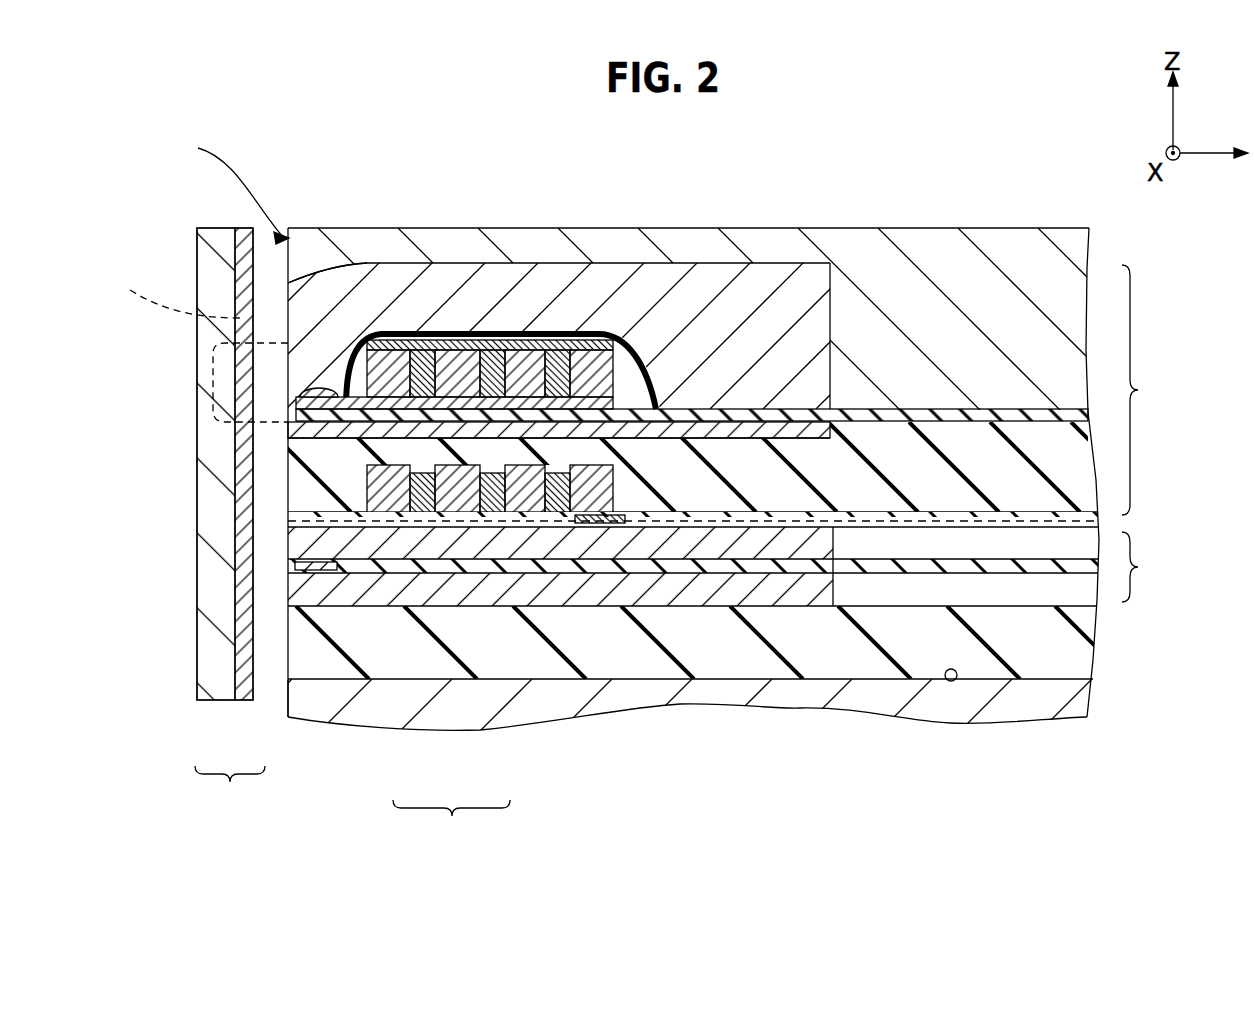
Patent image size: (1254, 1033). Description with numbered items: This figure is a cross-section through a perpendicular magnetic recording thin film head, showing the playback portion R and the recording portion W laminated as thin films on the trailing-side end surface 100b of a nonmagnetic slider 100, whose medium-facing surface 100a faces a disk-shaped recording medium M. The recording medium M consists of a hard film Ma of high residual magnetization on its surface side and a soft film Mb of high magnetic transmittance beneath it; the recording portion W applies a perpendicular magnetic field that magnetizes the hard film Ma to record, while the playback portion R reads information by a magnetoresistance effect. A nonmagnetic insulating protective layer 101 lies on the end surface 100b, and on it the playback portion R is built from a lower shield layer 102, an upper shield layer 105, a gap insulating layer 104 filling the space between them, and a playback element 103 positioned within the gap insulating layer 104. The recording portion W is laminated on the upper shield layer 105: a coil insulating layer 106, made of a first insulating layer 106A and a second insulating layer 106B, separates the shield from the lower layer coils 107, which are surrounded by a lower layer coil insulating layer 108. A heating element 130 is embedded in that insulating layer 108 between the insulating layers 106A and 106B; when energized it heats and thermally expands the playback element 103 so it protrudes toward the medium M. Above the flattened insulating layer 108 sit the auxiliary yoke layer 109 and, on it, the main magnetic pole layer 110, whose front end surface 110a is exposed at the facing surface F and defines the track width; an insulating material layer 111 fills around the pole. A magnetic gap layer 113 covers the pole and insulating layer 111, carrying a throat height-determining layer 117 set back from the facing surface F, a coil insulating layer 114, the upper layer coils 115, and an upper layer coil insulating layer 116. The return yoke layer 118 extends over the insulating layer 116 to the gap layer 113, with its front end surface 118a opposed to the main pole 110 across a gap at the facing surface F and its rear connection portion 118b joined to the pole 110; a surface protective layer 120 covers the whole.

The slider 100 is at (850, 695).
The medium-facing surface 100a is at (285, 703).
The trailing-side end surface 100b is at (955, 681).
The protective layer 101 is at (340, 663).
The lower shield layer 102 is at (300, 595).
The playback element 103 is at (292, 567).
The gap insulating layer 104 is at (670, 567).
The upper shield layer 105 is at (300, 550).
The coil insulating layer 106 is at (693, 653).
The first insulating layer 106A is at (404, 525).
The second insulating layer 106B is at (467, 515).
The lower layer coils 107 is at (445, 437).
The lower layer coil insulating layer 108 is at (298, 492).
The auxiliary yoke layer 109 is at (340, 450).
The main magnetic pole layer 110 is at (290, 428).
The front end surface 110a is at (290, 412).
The insulating material layer 111 is at (992, 413).
The magnetic gap layer 113 is at (290, 403).
The coil insulating layer 114 is at (552, 397).
The upper layer coils 115 is at (488, 338).
The upper layer coil insulating layer 116 is at (637, 353).
The throat height-determining layer 117 is at (323, 389).
The return yoke layer 118 is at (604, 272).
The front end surface 118a is at (288, 300).
The connection portion 118b is at (760, 300).
The surface protective layer 120 is at (892, 280).
The heating element 130 is at (590, 523).
The recording medium M is at (230, 514).
The hard film Ma is at (247, 700).
The soft film Mb is at (210, 700).
The facing surface F is at (234, 189).
The recording portion W is at (1143, 390).
The playback portion R is at (1139, 567).